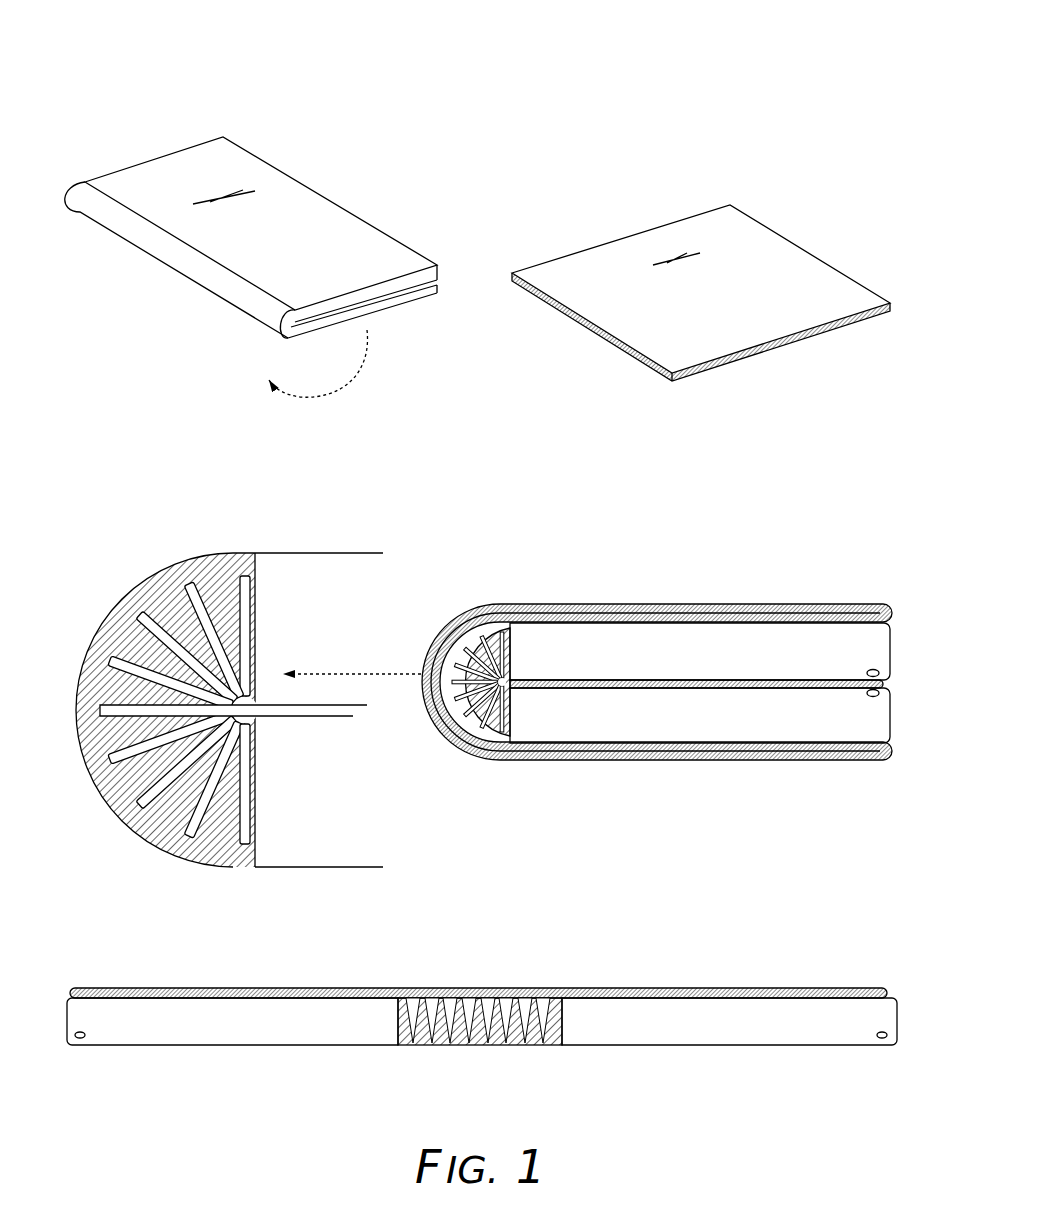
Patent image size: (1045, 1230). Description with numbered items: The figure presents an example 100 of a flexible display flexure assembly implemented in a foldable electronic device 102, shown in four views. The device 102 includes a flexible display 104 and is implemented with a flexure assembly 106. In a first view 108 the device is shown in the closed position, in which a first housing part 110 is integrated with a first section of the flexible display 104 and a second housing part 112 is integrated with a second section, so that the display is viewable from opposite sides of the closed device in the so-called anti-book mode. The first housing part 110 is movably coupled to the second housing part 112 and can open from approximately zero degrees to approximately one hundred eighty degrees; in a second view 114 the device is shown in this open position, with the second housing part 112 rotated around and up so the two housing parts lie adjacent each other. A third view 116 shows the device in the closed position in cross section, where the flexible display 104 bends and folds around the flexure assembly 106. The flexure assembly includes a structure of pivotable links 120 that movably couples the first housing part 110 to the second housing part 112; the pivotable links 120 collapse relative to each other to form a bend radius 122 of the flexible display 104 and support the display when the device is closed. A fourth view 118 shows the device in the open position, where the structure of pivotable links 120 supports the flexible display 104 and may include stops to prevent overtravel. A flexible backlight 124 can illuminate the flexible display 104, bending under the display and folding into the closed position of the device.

The example of a flexible display flexure assembly 100 is at (757, 90).
The foldable electronic device 102 is at (118, 141).
The flexible display 104 is at (317, 227).
The flexure assembly 106 is at (187, 263).
The first view 108 is at (318, 128).
The first housing part 110 is at (370, 290).
The second housing part 112 is at (397, 300).
The second view 114 is at (628, 203).
The third view 116 is at (694, 505).
The fourth view 118 is at (570, 938).
The pivotable links 120 is at (187, 562).
The bend radius 122 is at (457, 742).
The flexible backlight 124 is at (550, 748).